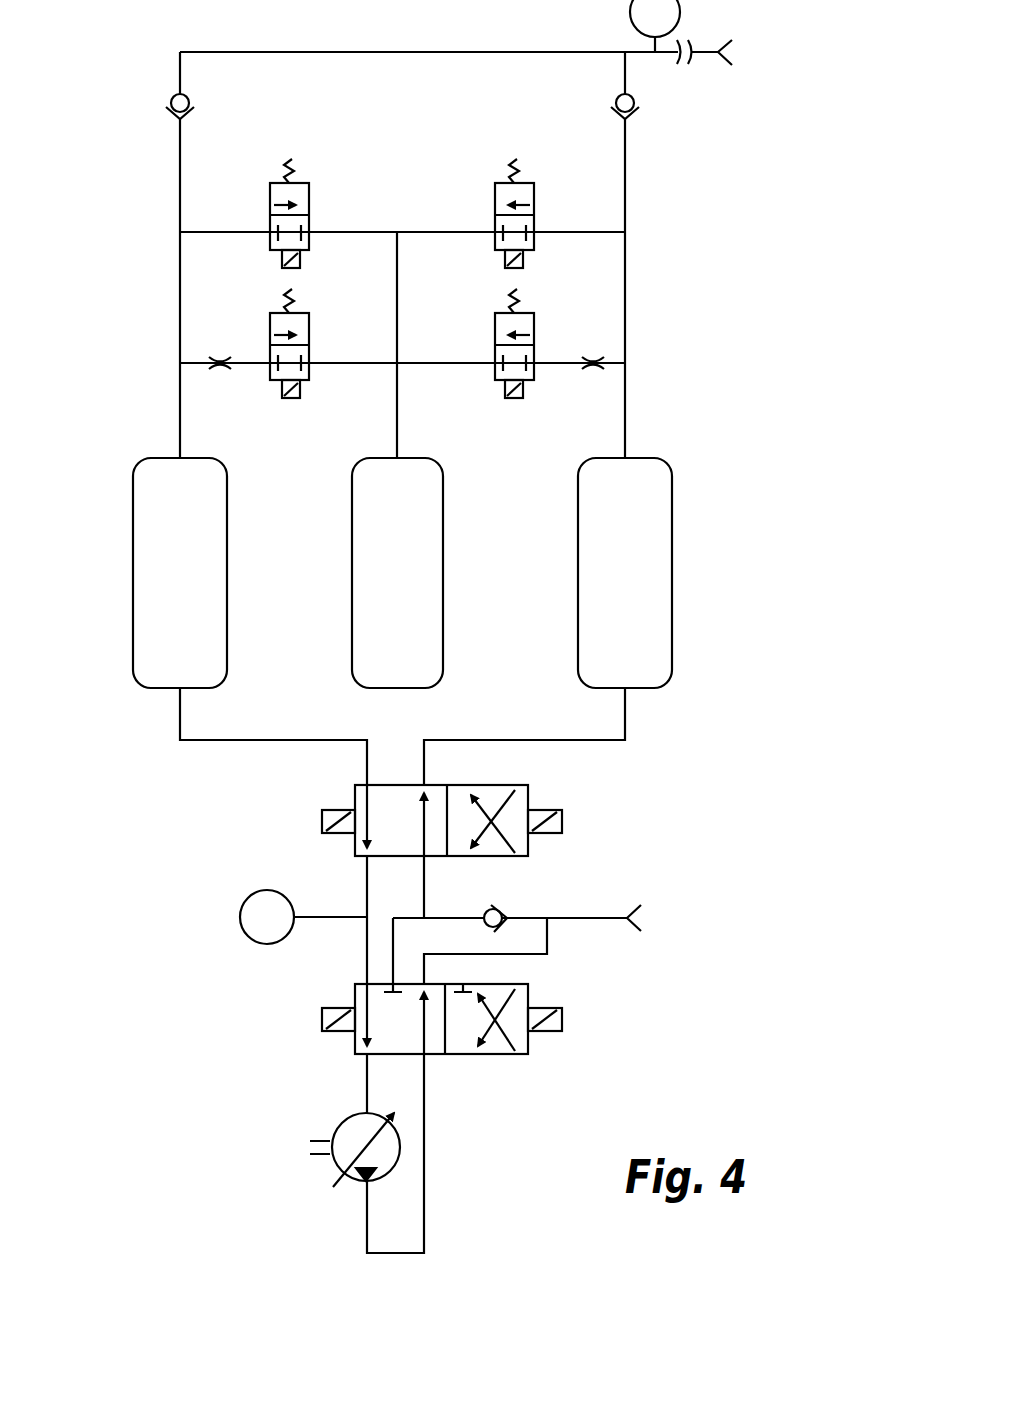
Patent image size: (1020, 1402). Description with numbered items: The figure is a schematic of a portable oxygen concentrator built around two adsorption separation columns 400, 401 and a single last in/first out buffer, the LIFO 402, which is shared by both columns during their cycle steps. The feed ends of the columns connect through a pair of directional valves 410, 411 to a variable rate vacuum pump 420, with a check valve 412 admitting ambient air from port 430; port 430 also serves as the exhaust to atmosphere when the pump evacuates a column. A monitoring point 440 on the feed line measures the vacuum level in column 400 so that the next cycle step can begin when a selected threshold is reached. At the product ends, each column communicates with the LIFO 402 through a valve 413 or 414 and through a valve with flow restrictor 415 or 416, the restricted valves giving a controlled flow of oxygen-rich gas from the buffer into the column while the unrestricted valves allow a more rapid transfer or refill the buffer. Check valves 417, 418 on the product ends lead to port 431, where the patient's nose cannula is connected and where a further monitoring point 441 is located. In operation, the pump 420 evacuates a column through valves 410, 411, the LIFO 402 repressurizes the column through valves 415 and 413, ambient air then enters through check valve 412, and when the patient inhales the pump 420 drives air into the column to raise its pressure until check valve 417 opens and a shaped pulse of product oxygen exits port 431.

The separation column 400 is at (180, 573).
The separation column 401 is at (625, 573).
The LIFO buffer 402 is at (397, 573).
The valve 410 is at (355, 790).
The valve 411 is at (358, 985).
The check valve 412 is at (502, 910).
The valve 413 is at (270, 208).
The valve 414 is at (495, 187).
The valve with flow restrictor 415 is at (226, 356).
The valve with flow restrictor 416 is at (590, 357).
The check valve 417 is at (171, 107).
The check valve 418 is at (633, 112).
The variable rate vacuum pump 420 is at (338, 1126).
The port 430 is at (617, 918).
The port 431 is at (730, 53).
The monitoring point 440 is at (267, 917).
The monitoring point 441 is at (655, 26).